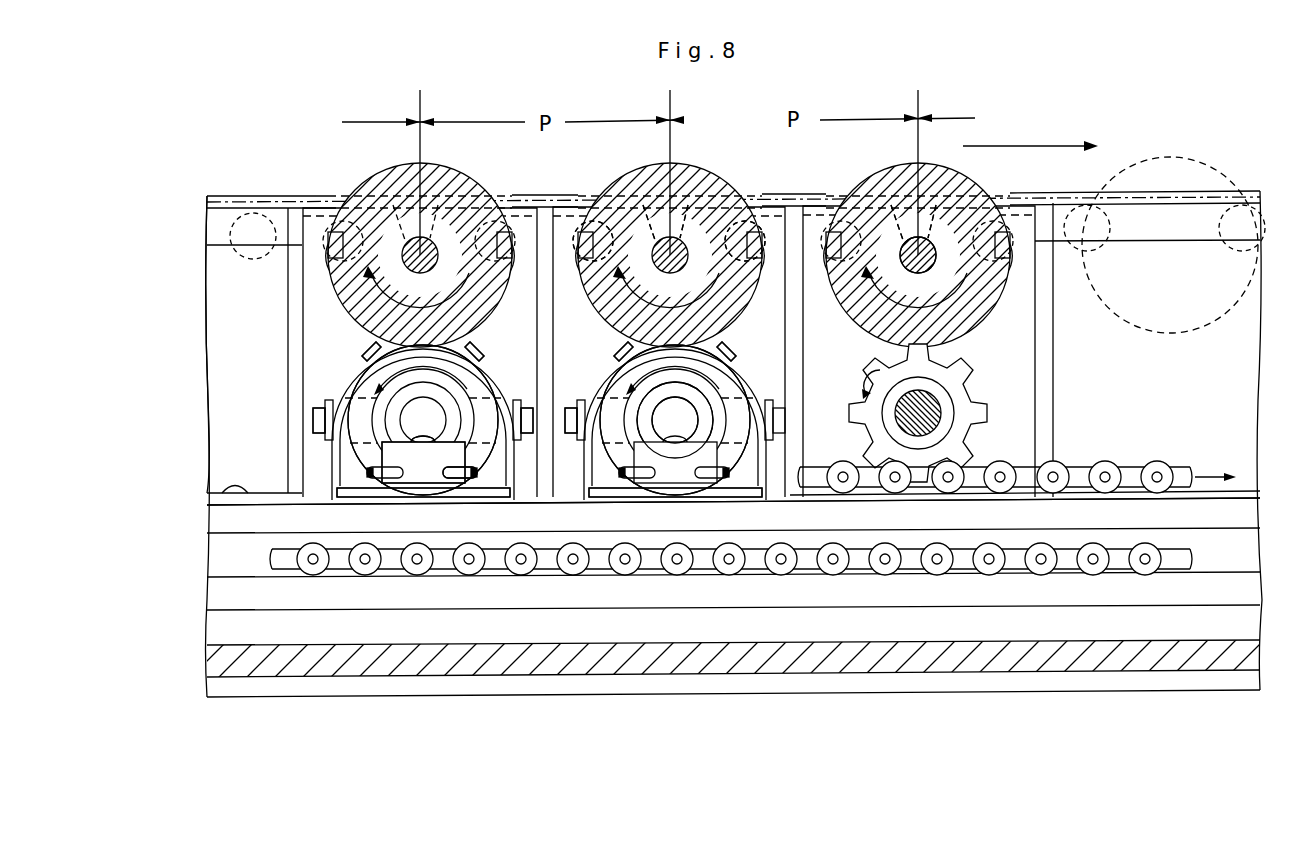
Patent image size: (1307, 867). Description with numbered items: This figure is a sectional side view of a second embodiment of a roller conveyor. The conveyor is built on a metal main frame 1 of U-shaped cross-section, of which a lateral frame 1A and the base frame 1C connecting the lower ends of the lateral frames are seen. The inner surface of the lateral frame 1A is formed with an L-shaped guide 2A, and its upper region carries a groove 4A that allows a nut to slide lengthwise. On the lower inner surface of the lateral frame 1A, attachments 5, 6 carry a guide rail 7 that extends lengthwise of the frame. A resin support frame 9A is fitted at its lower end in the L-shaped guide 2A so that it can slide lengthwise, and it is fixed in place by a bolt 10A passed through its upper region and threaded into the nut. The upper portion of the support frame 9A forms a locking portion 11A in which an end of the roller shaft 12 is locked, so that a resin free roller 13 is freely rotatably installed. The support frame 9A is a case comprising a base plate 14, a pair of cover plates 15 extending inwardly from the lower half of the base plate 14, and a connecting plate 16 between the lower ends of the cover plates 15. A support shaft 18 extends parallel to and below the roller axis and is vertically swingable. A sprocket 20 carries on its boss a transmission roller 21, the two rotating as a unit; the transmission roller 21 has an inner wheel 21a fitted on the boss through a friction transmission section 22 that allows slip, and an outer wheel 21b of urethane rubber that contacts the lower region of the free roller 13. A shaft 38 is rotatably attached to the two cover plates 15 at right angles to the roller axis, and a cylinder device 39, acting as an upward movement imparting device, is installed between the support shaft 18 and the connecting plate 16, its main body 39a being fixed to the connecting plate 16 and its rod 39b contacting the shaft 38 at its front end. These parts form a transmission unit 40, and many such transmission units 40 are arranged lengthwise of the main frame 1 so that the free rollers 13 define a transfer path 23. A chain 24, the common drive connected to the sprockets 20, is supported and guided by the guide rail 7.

The main frame 1 is at (235, 700).
The lateral frame 1A is at (225, 397).
The base frame 1C is at (310, 668).
The L-shaped guide 2A is at (240, 484).
The groove 4A is at (214, 228).
The attachment 5 is at (1245, 518).
The attachment 6 is at (1245, 590).
The upper guide rail 7 is at (1245, 497).
The support frame 9A is at (299, 323).
The bolt 10A is at (566, 222).
The locking portion 11A is at (690, 180).
The roller shaft 12 is at (930, 262).
The free roller 13 is at (462, 196).
The base plate 14 is at (322, 347).
The cover plate 15 is at (330, 455).
The connecting plate 16 is at (468, 490).
The support shaft 18 is at (684, 408).
The sprocket 20 is at (857, 412).
The transmission roller 21 is at (350, 471).
The inner wheel 21a is at (335, 417).
The outer wheel 21b is at (455, 360).
The friction transmission section 22 is at (713, 421).
The transfer path 23 is at (1015, 146).
The chain 24 is at (1042, 546).
The shaft 38 is at (550, 400).
The cylinder device 39 is at (426, 497).
The main body 39a is at (443, 485).
The rod 39b is at (420, 443).
The transmission unit 40 is at (611, 512).